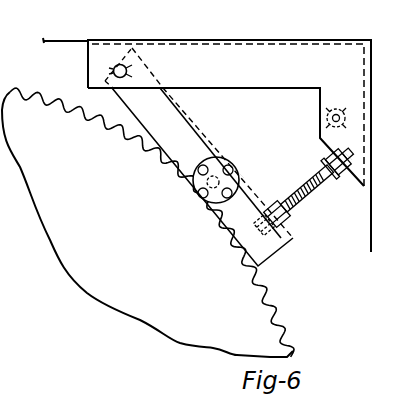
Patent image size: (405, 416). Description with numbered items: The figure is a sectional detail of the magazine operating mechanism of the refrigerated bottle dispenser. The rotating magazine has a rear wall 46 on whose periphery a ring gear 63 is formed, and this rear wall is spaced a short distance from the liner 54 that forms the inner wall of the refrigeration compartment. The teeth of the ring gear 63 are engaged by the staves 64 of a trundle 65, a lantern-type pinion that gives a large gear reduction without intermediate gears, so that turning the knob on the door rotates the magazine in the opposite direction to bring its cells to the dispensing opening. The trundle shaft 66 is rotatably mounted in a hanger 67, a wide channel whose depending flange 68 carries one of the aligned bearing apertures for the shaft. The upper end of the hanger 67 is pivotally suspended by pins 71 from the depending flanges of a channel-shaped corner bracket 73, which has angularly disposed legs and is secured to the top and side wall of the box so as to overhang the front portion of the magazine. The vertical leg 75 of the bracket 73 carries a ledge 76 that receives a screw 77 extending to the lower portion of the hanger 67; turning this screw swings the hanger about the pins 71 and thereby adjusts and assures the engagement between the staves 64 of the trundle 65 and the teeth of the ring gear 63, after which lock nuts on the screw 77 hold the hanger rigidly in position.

The rear wall 46 is at (158, 327).
The liner 54 is at (54, 147).
The ring gear 63 is at (50, 97).
The staves 64 is at (198, 164).
The trundle 65 is at (240, 176).
The trundle shaft 66 is at (216, 153).
The hanger 67 is at (203, 134).
The depending flange 68 is at (184, 116).
The pins 71 is at (128, 67).
The corner bracket 73 is at (288, 41).
The vertical leg 75 is at (322, 106).
The ledge 76 is at (352, 180).
The screw 77 is at (307, 193).